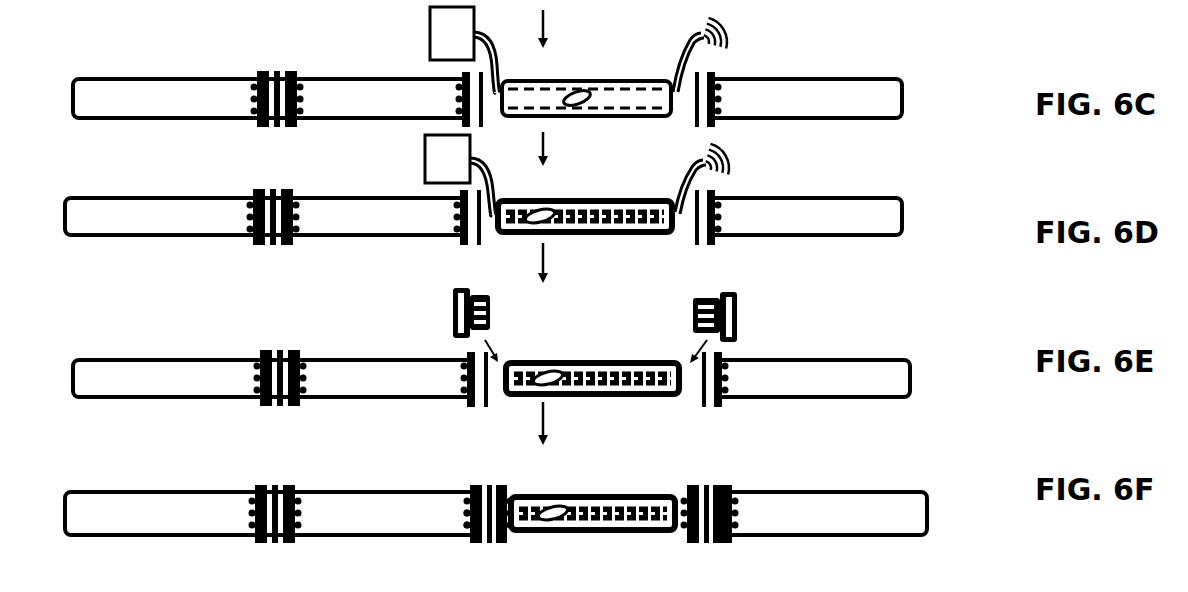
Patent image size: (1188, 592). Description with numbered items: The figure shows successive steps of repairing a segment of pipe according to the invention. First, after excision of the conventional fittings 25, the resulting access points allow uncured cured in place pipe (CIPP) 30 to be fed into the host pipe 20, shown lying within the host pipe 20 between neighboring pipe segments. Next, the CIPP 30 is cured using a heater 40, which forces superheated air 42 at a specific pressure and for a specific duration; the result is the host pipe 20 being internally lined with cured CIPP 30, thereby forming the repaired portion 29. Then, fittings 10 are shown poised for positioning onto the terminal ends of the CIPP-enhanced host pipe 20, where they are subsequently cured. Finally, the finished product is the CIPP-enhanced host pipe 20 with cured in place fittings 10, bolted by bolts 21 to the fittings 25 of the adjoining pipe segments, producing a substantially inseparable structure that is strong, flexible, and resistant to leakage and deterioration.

In FIG. 6E, the fitting 10 is at (457, 302).
In FIG. 6F, the fitting 10 is at (493, 492).
In FIG. 6D, the host pipe 20 is at (585, 235).
In FIG. 6E, the host pipe 20 is at (661, 395).
In FIG. 6F, the host pipe 20 is at (593, 513).
In FIG. 6F, the bolts 21 is at (463, 512).
In FIG. 6F, the conventional fitting 25 is at (472, 488).
In FIG. 6D, the repaired portion 29 is at (544, 197).
In FIG. 6C, the cured in place pipe (CIPP) 30 is at (648, 95).
In FIG. 6D, the cured in place pipe (CIPP) 30 is at (618, 218).
In FIG. 6E, the cured in place pipe (CIPP) 30 is at (618, 380).
In FIG. 6F, the cured in place pipe (CIPP) 30 is at (593, 512).
In FIG. 6C, the heater 40 is at (465, 50).
In FIG. 6D, the heater 40 is at (460, 175).
In FIG. 6C, the air 42 is at (748, 20).
In FIG. 6D, the air 42 is at (746, 147).